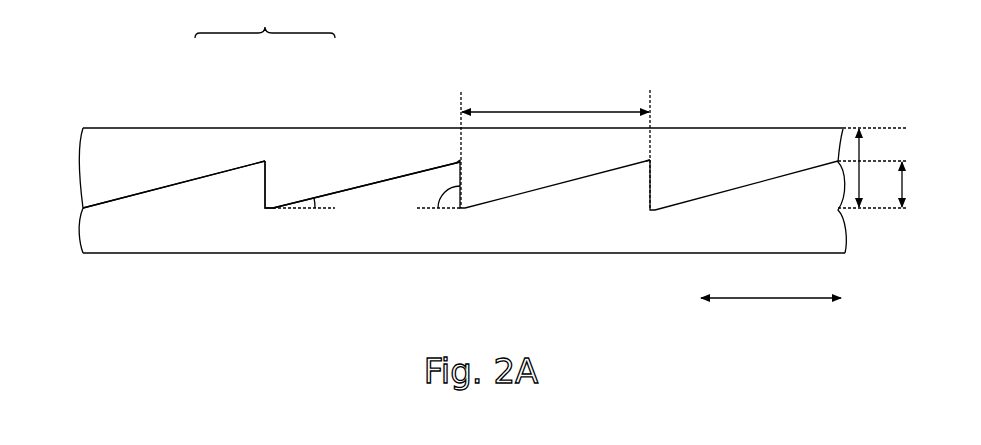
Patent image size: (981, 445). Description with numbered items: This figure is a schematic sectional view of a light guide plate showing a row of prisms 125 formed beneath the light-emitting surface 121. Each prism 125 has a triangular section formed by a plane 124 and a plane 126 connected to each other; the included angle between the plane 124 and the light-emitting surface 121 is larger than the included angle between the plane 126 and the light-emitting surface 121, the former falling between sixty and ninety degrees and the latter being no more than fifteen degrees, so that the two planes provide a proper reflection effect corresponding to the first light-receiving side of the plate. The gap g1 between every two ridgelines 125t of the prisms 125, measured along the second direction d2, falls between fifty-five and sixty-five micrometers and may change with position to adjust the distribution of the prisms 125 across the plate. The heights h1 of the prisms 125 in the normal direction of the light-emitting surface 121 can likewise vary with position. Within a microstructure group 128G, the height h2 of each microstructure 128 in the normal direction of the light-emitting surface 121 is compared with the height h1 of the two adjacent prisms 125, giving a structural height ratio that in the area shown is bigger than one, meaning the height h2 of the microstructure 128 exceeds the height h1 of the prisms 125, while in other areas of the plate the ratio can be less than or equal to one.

The light-emitting surface 121 is at (143, 256).
The plane 124 is at (464, 168).
The prism 125 is at (218, 183).
The ridgeline 125t is at (460, 160).
The plane 126 is at (371, 180).
The microstructure 128 is at (210, 158).
The microstructure group 128G is at (265, 19).
The gap g1 is at (555, 149).
The height of the prisms h1 is at (886, 184).
The height of the microstructure h2 is at (873, 168).
The second direction d2 is at (771, 313).